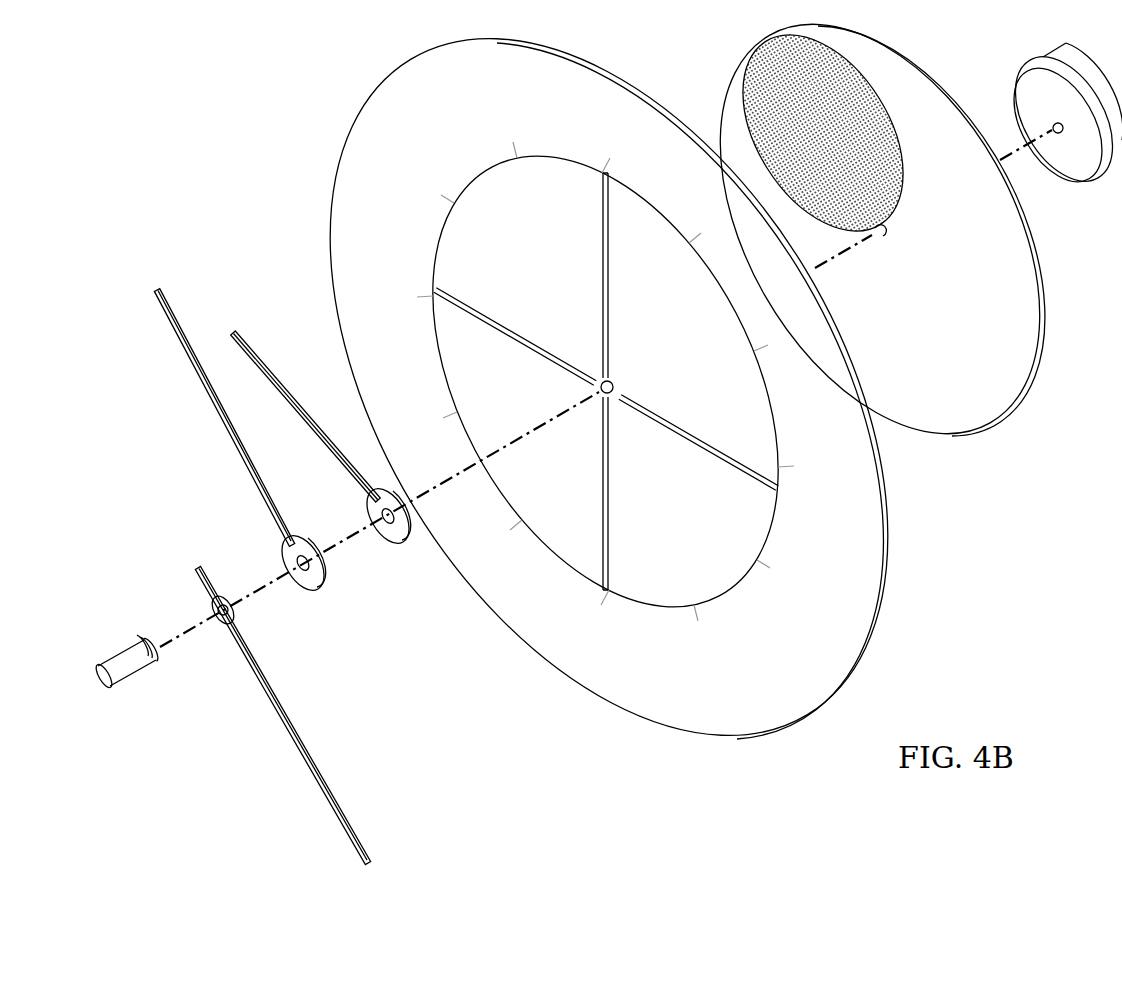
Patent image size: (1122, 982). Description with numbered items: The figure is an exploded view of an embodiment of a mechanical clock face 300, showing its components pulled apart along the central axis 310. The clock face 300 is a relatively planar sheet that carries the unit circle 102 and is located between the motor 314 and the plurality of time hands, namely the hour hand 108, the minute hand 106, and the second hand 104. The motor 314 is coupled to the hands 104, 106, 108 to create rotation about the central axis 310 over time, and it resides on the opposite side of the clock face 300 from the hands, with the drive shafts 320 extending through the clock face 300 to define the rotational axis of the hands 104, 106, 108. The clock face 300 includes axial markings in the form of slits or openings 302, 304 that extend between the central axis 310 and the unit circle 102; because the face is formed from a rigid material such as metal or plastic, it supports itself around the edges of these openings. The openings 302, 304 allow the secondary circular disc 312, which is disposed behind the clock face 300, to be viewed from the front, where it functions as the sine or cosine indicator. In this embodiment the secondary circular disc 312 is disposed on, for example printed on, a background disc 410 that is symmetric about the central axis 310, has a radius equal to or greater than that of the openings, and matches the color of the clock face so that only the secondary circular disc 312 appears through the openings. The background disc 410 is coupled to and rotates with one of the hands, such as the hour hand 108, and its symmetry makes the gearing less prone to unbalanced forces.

The mechanical clock face 300 is at (314, 112).
The unit circle 102 is at (728, 325).
The opening 302 is at (602, 283).
The opening 304 is at (692, 440).
The secondary circular disc 312 is at (767, 70).
The motor 314 is at (1050, 160).
The background disc 410 is at (900, 408).
The second hand 104 is at (296, 742).
The minute hand 106 is at (222, 418).
The hour hand 108 is at (305, 407).
The central axis 310 is at (336, 545).
The drive shafts 320 is at (122, 653).